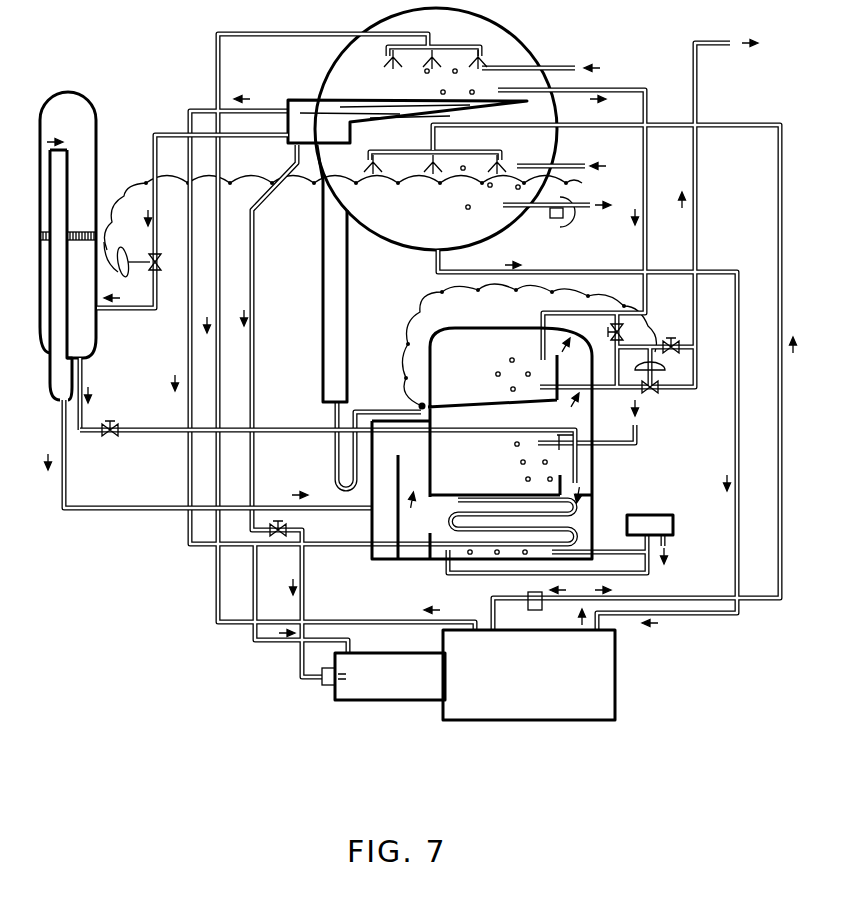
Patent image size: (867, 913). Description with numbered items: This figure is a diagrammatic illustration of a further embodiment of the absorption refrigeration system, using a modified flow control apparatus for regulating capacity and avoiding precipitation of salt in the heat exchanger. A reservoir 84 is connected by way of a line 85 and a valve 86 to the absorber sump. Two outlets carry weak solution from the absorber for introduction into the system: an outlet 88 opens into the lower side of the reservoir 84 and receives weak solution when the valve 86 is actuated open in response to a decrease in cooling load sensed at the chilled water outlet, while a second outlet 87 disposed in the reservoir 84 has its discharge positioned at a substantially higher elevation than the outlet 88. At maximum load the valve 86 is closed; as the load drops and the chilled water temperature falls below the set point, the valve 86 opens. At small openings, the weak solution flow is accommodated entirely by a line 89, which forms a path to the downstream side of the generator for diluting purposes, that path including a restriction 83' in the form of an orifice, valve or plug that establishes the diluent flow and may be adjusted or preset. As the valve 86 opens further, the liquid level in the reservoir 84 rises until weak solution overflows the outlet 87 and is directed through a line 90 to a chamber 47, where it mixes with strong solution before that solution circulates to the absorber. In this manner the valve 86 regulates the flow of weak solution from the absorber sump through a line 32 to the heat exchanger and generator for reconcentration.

The reservoir 84 is at (58, 99).
The line 32 is at (200, 107).
The line 85 is at (152, 152).
The valve 86 is at (118, 270).
The second outlet 87 is at (60, 310).
The outlet 88 is at (85, 351).
The line 89 is at (84, 377).
The line 90 is at (60, 422).
The restriction 83' is at (327, 442).
The chamber 47 is at (388, 496).